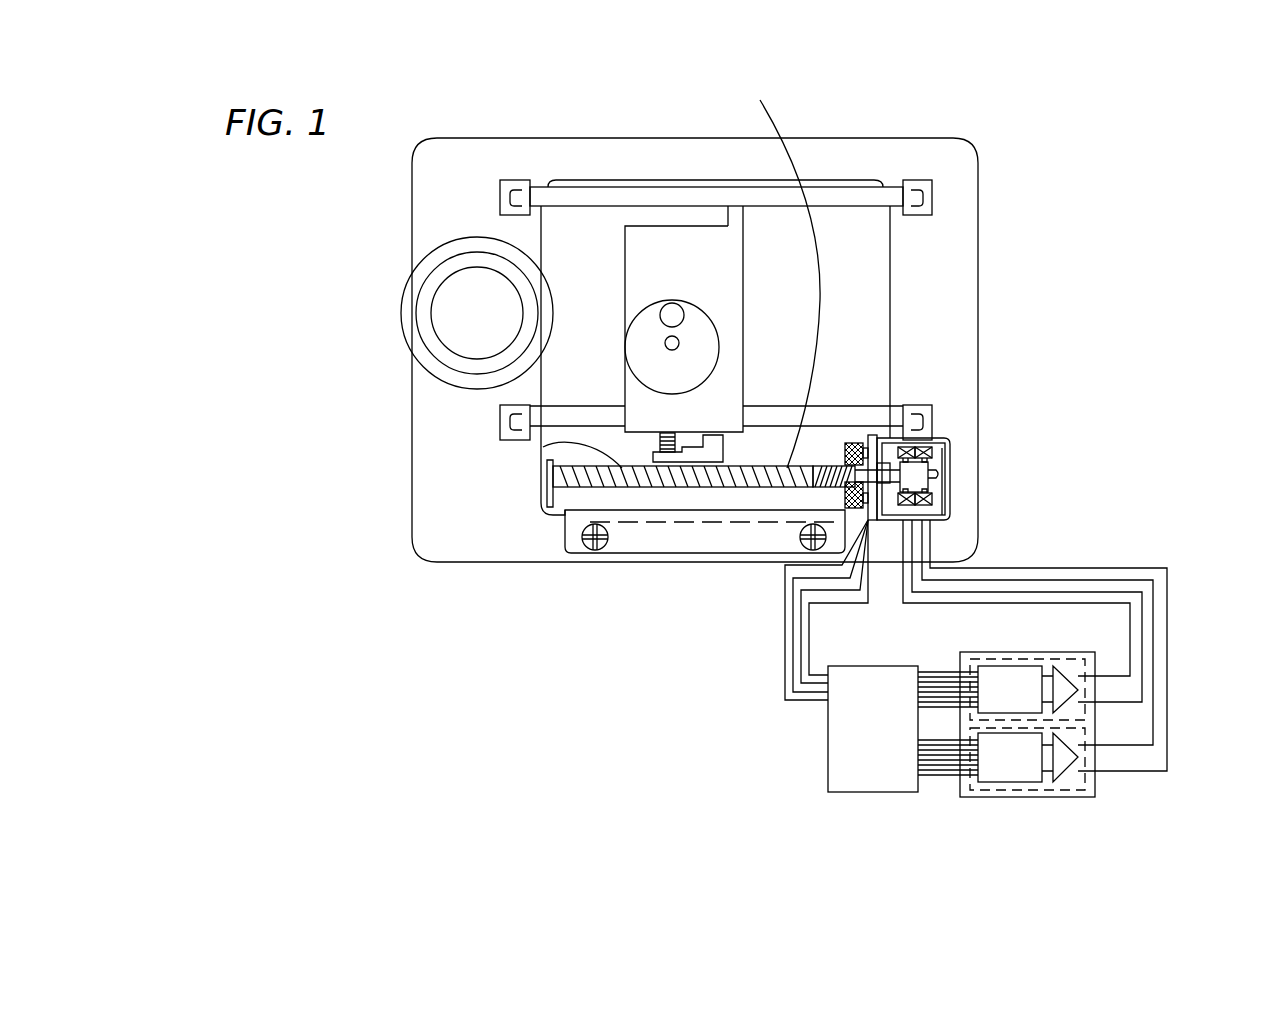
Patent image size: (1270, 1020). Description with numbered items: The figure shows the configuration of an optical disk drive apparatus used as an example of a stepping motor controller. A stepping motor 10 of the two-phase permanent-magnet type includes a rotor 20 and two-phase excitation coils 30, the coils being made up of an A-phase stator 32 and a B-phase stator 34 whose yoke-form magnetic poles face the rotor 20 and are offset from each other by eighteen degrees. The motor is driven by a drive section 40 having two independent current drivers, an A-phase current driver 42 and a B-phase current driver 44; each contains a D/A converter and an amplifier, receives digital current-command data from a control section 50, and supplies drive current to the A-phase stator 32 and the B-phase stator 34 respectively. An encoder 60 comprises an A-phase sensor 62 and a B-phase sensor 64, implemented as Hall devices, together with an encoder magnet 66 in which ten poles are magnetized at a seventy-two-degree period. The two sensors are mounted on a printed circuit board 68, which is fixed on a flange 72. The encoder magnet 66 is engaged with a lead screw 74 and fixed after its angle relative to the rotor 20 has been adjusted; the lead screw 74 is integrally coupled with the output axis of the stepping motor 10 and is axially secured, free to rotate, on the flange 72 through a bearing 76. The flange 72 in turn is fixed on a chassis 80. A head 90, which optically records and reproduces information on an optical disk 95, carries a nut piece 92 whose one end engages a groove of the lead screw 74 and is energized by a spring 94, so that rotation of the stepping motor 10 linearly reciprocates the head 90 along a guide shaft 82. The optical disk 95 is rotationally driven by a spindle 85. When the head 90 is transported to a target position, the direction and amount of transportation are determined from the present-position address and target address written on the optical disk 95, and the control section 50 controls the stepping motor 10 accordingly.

The stepping motor 10 is at (998, 447).
The rotor 20 is at (948, 462).
The two-phase excitation coils 30 is at (1064, 458).
The A-phase stator 32 is at (928, 528).
The B-phase stator 34 is at (940, 492).
The drive section 40 is at (1076, 684).
The A-phase current driver 42 is at (1058, 658).
The B-phase current driver 44 is at (1087, 737).
The control section 50 is at (828, 755).
The encoder 60 is at (690, 592).
The A-phase sensor 62 is at (810, 466).
The B-phase sensor 64 is at (868, 518).
The encoder magnet 66 is at (845, 445).
The printed circuit board 68 is at (872, 520).
The flange 72 is at (625, 541).
The lead screw 74 is at (540, 441).
The bearing 76 is at (555, 478).
The chassis 80 is at (963, 200).
The guide shaft 82 is at (850, 202).
The spindle 85 is at (472, 237).
The head 90 is at (730, 272).
The nut piece 92 is at (703, 435).
The spring 94 is at (672, 423).
The optical disk 95 is at (820, 283).